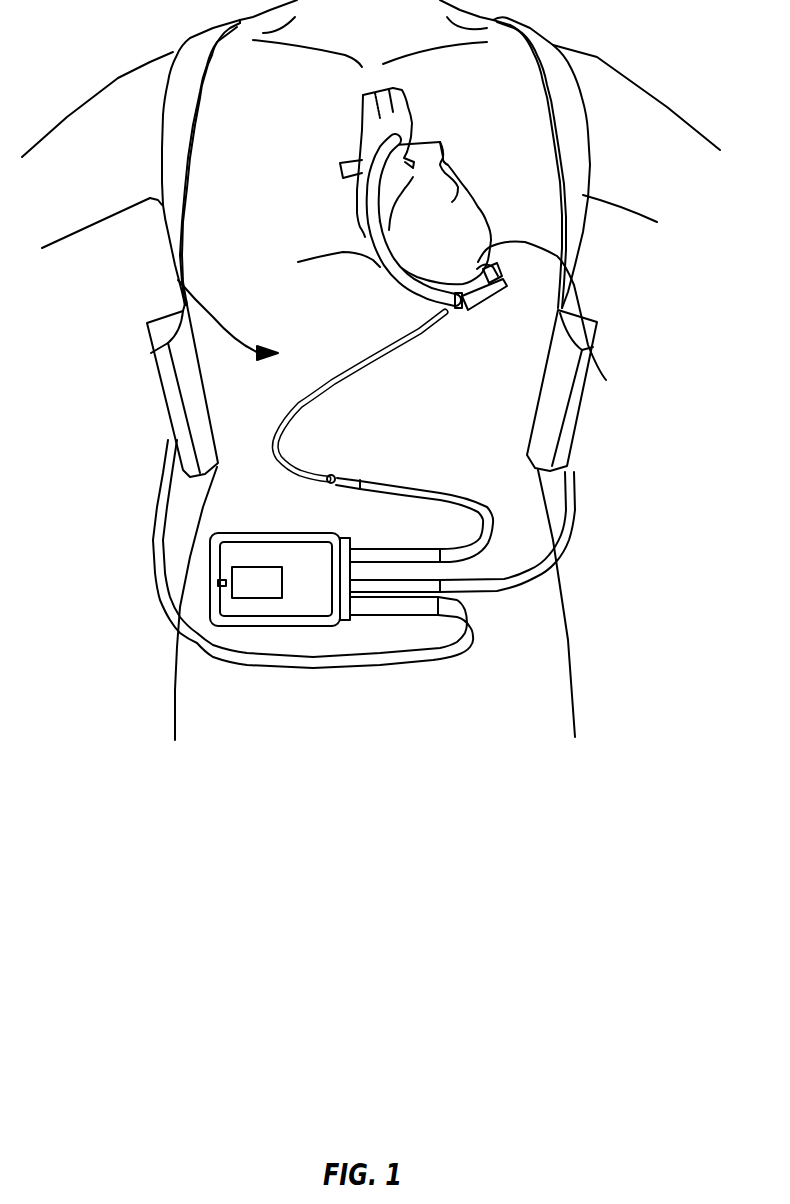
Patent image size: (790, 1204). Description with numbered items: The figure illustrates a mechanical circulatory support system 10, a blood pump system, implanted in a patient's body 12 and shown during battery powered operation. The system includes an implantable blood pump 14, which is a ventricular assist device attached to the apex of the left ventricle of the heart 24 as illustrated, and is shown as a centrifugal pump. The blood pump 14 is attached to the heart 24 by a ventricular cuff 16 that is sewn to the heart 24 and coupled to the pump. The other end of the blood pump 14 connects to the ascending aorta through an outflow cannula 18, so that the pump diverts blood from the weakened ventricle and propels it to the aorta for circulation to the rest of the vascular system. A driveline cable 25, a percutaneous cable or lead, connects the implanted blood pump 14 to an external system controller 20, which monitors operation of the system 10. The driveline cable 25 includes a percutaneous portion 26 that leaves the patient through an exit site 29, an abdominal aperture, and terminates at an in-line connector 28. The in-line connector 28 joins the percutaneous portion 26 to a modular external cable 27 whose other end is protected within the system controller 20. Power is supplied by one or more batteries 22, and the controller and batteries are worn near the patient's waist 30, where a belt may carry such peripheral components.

The mechanical circulatory support system 10 is at (600, 293).
The patient's body 12 is at (137, 133).
The implantable blood pump 14 is at (571, 378).
The ventricular cuff 16 is at (490, 252).
The outflow cannula 18 is at (370, 258).
The system controller 20 is at (205, 583).
The batteries 22 is at (163, 405).
The heart 24 is at (448, 227).
The driveline cable 25 is at (183, 302).
The percutaneous portion 26 is at (357, 350).
The modular external cable 27 is at (490, 519).
The in-line connector 28 is at (354, 474).
The exit site 29 is at (333, 447).
The patient's waist 30 is at (200, 508).